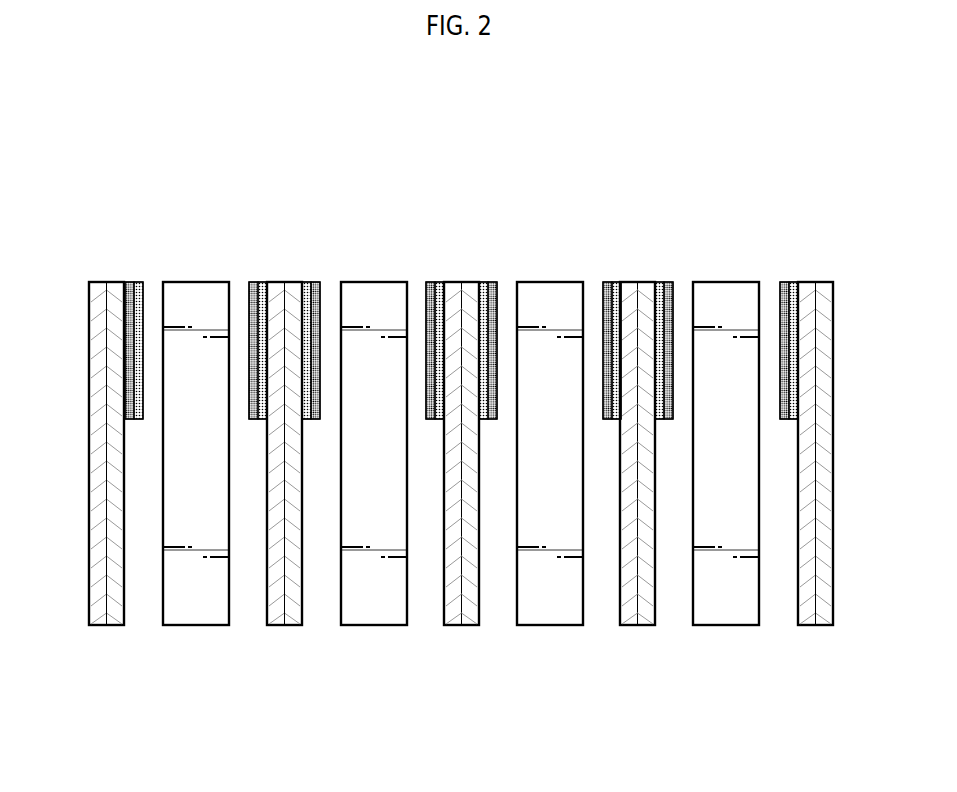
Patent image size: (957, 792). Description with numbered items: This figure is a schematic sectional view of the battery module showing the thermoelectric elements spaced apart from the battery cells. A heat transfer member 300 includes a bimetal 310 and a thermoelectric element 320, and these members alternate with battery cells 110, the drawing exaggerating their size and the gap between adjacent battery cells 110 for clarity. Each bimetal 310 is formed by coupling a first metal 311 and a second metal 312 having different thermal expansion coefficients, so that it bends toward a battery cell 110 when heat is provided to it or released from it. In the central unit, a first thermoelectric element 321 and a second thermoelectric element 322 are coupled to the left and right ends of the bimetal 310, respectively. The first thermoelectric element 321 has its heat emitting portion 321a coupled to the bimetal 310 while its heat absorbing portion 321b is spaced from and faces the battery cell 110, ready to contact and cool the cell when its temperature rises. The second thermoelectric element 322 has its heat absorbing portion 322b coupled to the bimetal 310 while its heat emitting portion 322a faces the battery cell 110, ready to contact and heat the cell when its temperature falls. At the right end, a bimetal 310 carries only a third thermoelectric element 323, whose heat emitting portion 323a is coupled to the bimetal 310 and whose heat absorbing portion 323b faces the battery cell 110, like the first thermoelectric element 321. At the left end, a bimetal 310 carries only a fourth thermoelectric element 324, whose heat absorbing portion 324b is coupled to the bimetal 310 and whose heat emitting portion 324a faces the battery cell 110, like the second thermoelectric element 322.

The heat transfer member 300 is at (345, 126).
The thermoelectric element 320 is at (287, 188).
The bimetal 310 is at (462, 507).
The first metal 311 is at (100, 628).
The second metal 312 is at (485, 482).
The battery cell 110 is at (196, 626).
The first thermoelectric element 321 is at (225, 300).
The heat emitting portion 321a is at (253, 323).
The heat absorbing portion 321b is at (252, 283).
The second thermoelectric element 322 is at (343, 300).
The heat emitting portion 322a is at (352, 323).
The heat absorbing portion 322b is at (306, 283).
The third thermoelectric element 323 is at (790, 300).
The heat emitting portion 323a is at (815, 323).
The heat absorbing portion 323b is at (786, 283).
The fourth thermoelectric element 324 is at (109, 300).
The heat emitting portion 324a is at (135, 323).
The heat absorbing portion 324b is at (128, 283).